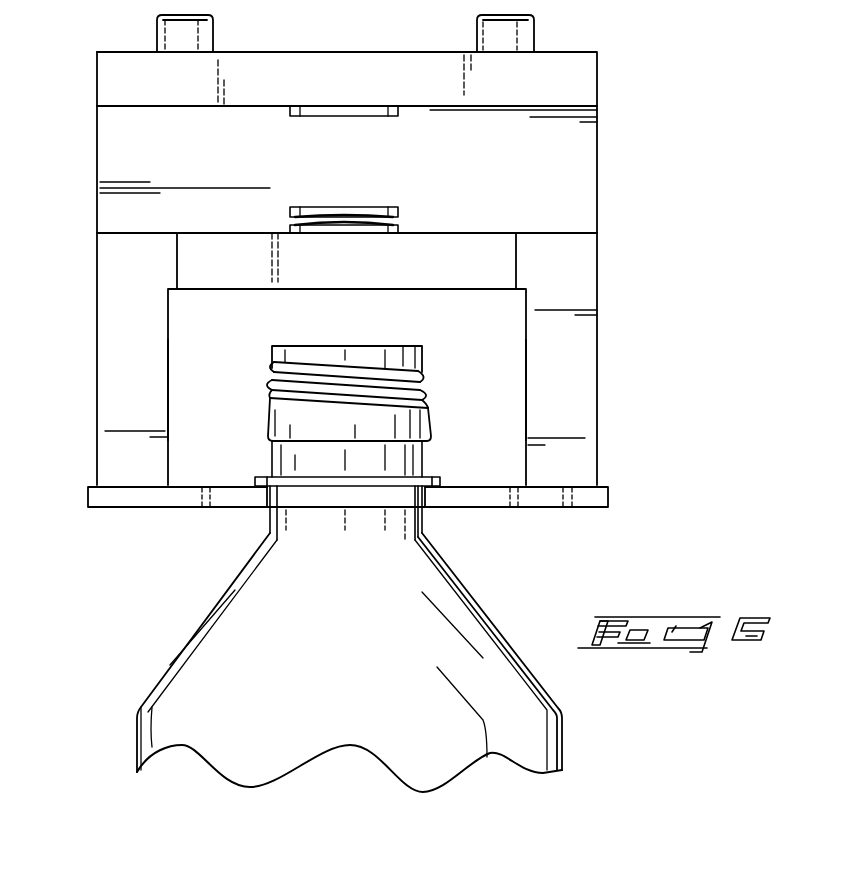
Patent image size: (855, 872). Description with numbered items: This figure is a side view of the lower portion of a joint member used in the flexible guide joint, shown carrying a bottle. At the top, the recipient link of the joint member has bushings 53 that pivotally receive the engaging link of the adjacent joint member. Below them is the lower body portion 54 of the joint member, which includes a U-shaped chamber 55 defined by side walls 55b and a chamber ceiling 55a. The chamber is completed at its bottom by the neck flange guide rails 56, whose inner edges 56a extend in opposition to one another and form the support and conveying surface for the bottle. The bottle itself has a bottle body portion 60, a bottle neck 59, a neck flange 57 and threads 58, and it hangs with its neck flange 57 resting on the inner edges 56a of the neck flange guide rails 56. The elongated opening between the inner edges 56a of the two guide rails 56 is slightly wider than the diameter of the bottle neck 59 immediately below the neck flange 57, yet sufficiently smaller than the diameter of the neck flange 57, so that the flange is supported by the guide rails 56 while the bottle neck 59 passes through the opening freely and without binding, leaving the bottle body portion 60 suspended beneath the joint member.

The bushings 53 is at (336, 117).
The lower body portion 54 is at (132, 398).
The U-shaped chamber 55 is at (215, 350).
The chamber ceiling 55a is at (258, 289).
The side walls 55b is at (170, 372).
The neck flange guide rails 56 is at (138, 500).
The inner edges 56a is at (265, 507).
The neck flange 57 is at (324, 487).
The threads 58 is at (427, 373).
The bottle neck 59 is at (305, 510).
The bottle body portion 60 is at (213, 690).